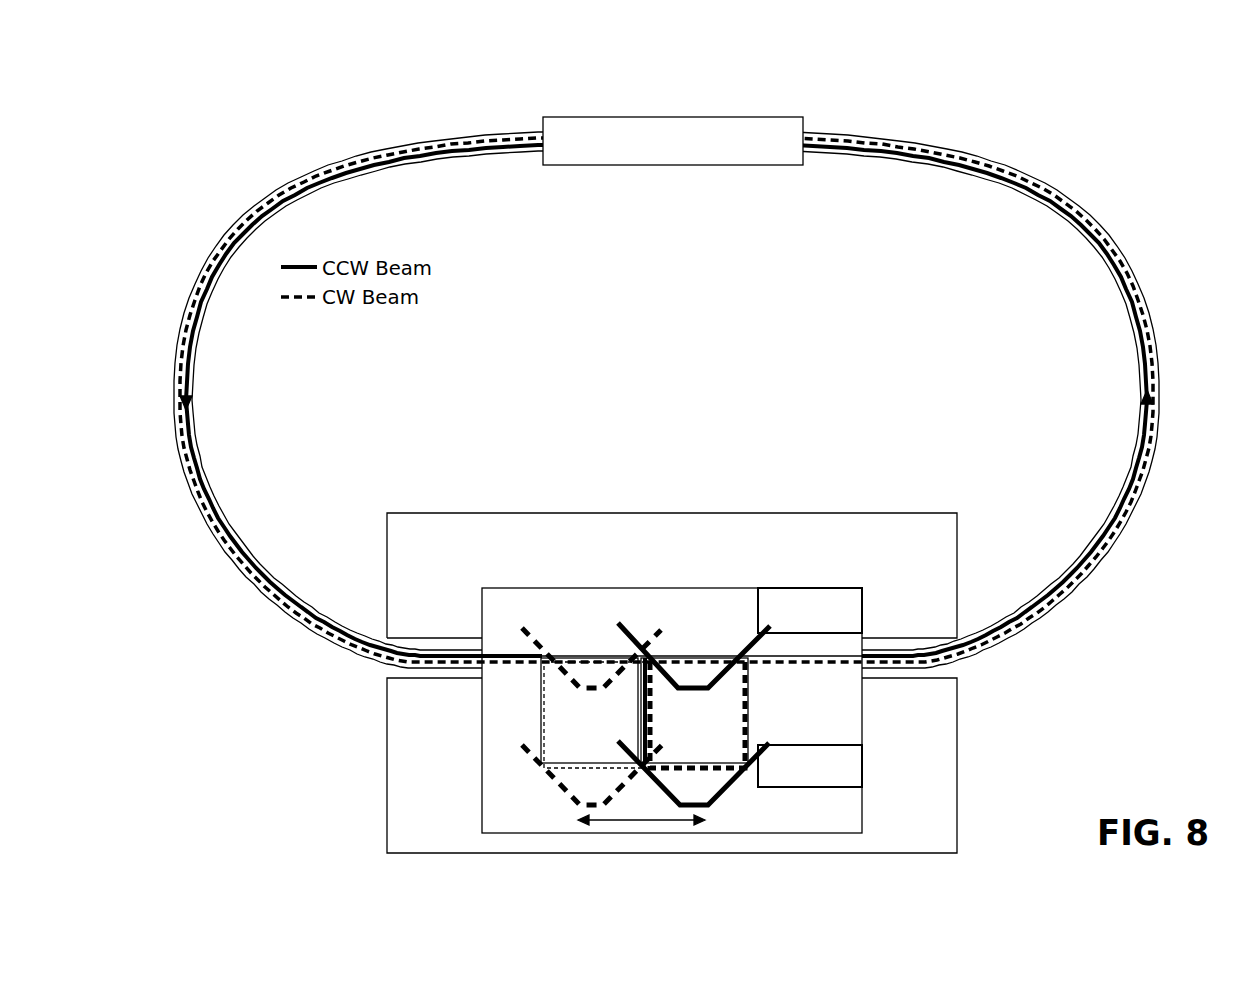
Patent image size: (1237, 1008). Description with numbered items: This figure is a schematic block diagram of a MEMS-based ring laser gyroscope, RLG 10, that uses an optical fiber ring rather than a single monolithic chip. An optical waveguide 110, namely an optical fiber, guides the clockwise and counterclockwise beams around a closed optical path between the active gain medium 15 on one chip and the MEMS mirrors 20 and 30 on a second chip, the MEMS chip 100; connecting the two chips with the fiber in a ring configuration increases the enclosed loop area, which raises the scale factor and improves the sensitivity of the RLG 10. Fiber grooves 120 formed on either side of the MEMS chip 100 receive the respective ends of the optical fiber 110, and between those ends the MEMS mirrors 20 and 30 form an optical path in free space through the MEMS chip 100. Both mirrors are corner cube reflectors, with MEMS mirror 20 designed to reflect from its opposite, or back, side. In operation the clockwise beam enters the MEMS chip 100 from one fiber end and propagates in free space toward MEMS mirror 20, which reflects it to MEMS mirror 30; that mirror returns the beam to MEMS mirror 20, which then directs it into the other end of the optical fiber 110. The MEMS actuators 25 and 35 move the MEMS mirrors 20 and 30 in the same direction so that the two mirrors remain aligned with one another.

The RLG 10 is at (1110, 150).
The active gain medium 15 is at (661, 153).
The MEMS mirror 20 is at (742, 650).
The MEMS actuator 25 is at (812, 589).
The MEMS mirror 30 is at (733, 783).
The MEMS actuator 35 is at (805, 745).
The MEMS chip 100 is at (928, 818).
The optical waveguide 110 is at (1137, 289).
The fiber grooves 120 is at (372, 672).